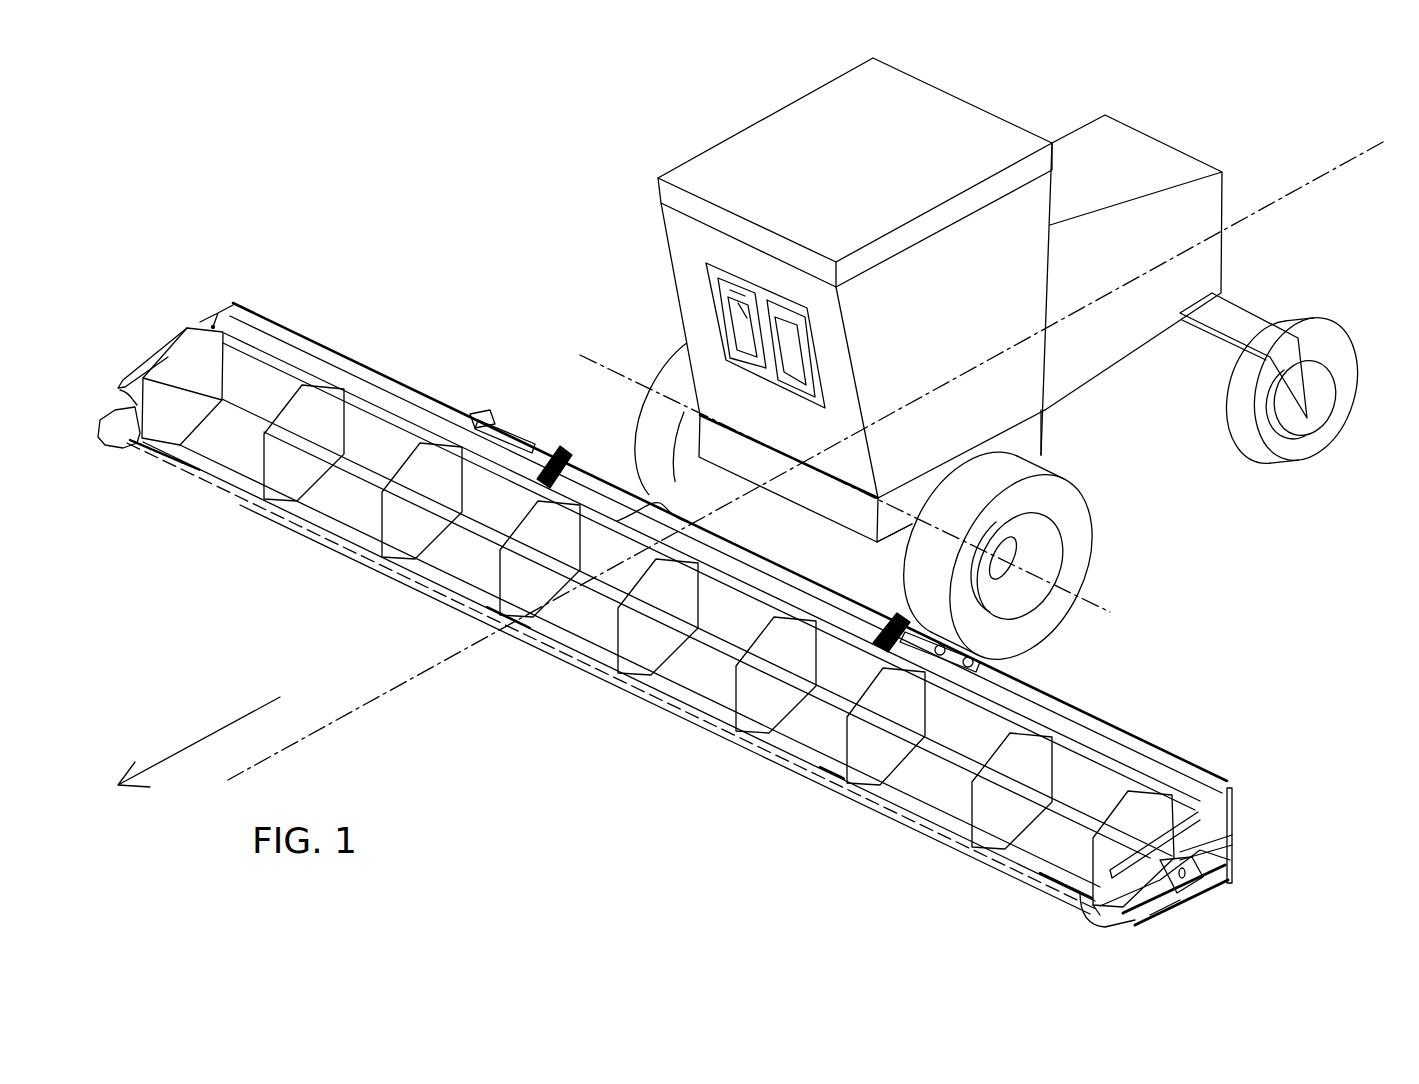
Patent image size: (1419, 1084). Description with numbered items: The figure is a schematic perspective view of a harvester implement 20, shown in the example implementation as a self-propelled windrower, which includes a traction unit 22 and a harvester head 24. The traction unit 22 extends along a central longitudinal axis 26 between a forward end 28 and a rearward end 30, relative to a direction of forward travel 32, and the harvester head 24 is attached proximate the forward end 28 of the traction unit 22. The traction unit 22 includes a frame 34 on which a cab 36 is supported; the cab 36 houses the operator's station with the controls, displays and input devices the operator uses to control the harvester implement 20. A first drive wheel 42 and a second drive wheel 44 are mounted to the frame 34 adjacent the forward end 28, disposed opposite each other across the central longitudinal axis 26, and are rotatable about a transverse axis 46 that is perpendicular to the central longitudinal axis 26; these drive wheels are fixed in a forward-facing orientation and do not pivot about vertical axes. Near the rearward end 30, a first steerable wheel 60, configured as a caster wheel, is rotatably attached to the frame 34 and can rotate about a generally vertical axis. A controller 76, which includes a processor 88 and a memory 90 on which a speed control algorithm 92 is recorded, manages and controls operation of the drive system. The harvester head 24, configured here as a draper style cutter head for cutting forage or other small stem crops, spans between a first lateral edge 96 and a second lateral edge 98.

The harvester implement 20 is at (375, 118).
The traction unit 22 is at (790, 103).
The harvester head 24 is at (1118, 730).
The central longitudinal axis 26 is at (1358, 140).
The forward end 28 is at (812, 487).
The rearward end 30 is at (1225, 197).
The direction of forward travel 32 is at (190, 747).
The frame 34 is at (1030, 440).
The cab 36 is at (668, 248).
The first drive wheel 42 is at (1065, 507).
The second drive wheel 44 is at (665, 440).
The transverse axis 46 is at (1108, 604).
The first steerable wheel 60 is at (1337, 353).
The controller 76 is at (722, 280).
The processor 88 is at (788, 338).
The memory 90 is at (740, 297).
The speed control algorithm 92 is at (746, 307).
The first lateral edge 96 is at (1152, 915).
The second lateral edge 98 is at (148, 368).